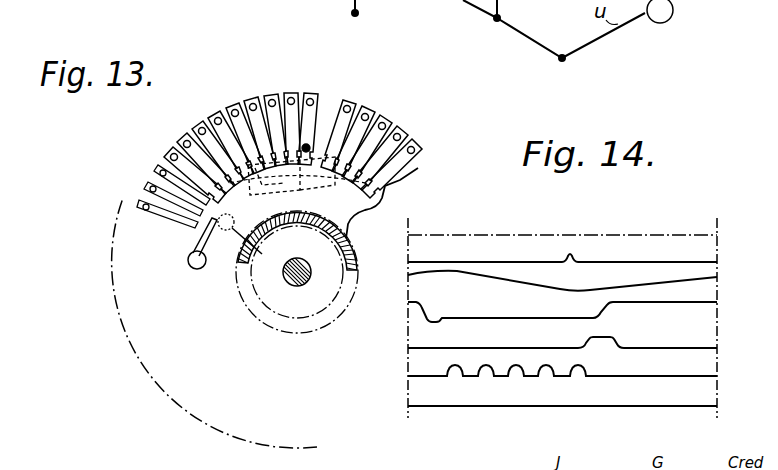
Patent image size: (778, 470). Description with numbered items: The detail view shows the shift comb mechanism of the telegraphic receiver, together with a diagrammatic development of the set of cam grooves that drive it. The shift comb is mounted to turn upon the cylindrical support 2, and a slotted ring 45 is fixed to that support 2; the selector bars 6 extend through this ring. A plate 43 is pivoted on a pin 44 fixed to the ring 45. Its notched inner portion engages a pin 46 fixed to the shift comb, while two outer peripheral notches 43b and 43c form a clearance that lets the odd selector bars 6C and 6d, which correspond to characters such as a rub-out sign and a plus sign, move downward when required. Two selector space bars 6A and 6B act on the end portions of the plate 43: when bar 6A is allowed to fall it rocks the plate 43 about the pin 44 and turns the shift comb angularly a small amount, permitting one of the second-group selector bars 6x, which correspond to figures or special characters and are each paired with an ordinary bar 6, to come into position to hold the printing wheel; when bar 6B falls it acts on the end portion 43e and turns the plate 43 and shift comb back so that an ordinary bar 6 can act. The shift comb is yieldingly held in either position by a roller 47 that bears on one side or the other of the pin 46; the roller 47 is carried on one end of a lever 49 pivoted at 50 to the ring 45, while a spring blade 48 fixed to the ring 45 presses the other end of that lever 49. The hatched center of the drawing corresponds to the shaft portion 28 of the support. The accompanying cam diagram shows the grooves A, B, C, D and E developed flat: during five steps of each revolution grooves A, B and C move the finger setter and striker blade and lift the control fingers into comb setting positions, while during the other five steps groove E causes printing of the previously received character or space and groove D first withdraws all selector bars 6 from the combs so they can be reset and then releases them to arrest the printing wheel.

In FIG. 13, the cylindrical support 2 is at (297, 218).
In FIG. 13, the selector bars 6 is at (254, 108).
In FIG. 13, the selector bars of the second group 6x is at (416, 123).
In FIG. 13, the selector space bar 6A is at (272, 135).
In FIG. 13, the selector space bar 6B is at (355, 130).
In FIG. 13, the selector bar 6C is at (296, 140).
In FIG. 13, the selector bar 6d is at (312, 142).
In FIG. 13, the shaft 28 is at (285, 273).
In FIG. 13, the plate 43 is at (366, 222).
In FIG. 13, the outer peripheral notch 43b is at (300, 158).
In FIG. 13, the outer peripheral notch 43c is at (345, 112).
In FIG. 13, the end portion 43e is at (416, 158).
In FIG. 13, the pin 44 is at (306, 148).
In FIG. 13, the slotted ring 45 is at (178, 248).
In FIG. 13, the pin 46 is at (325, 190).
In FIG. 13, the roller 47 is at (297, 241).
In FIG. 13, the spring blade 48 is at (215, 222).
In FIG. 13, the lever 49 is at (259, 197).
In FIG. 13, the pivot 50 is at (300, 170).
In FIG. 14, the cam groove A is at (437, 274).
In FIG. 14, the cam groove B is at (639, 378).
In FIG. 14, the cam groove C is at (652, 235).
In FIG. 14, the cam groove D is at (516, 346).
In FIG. 14, the cam groove E is at (430, 262).